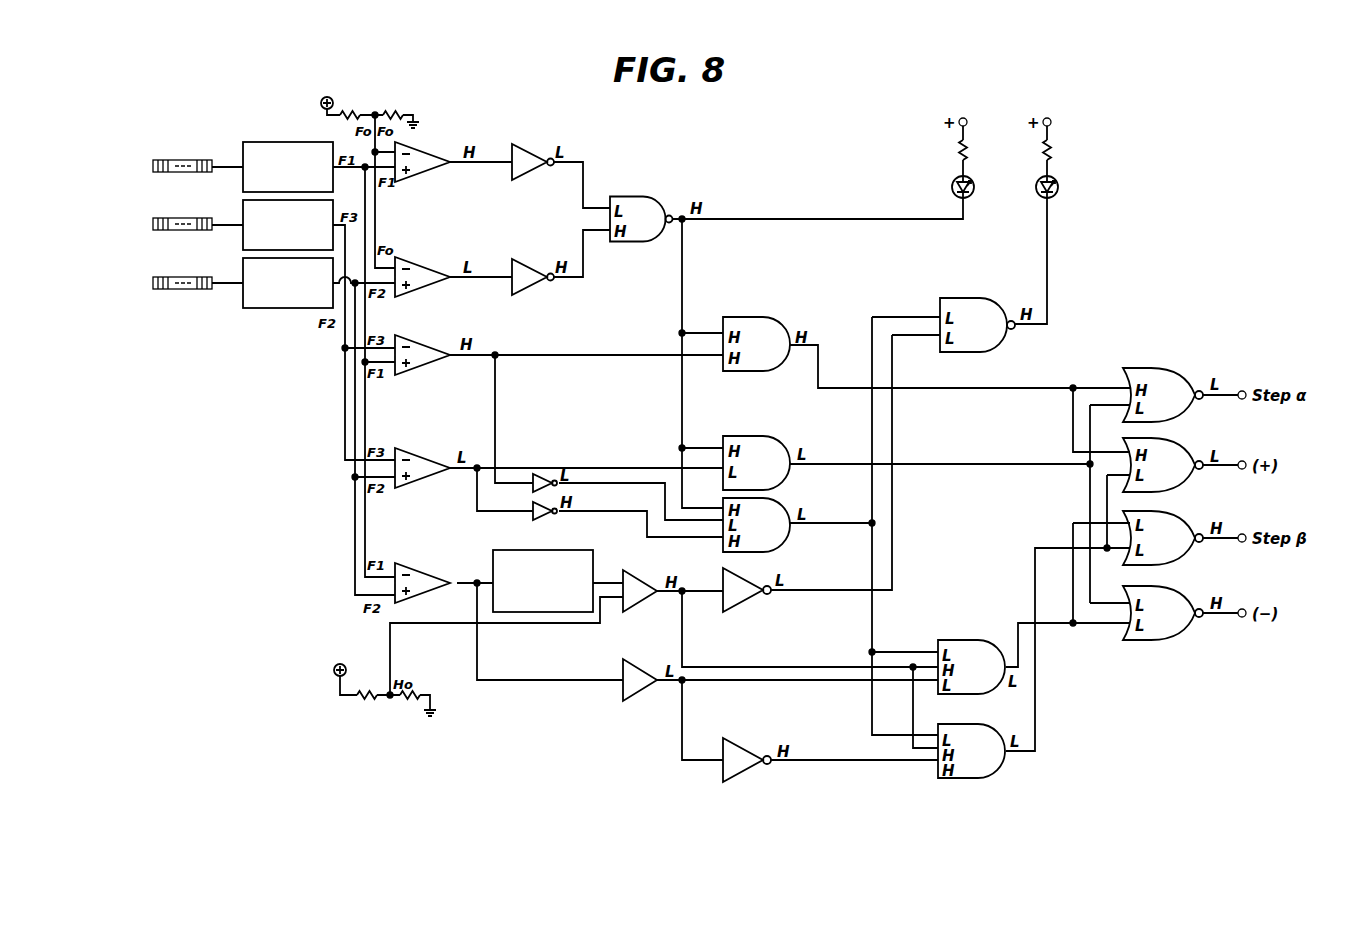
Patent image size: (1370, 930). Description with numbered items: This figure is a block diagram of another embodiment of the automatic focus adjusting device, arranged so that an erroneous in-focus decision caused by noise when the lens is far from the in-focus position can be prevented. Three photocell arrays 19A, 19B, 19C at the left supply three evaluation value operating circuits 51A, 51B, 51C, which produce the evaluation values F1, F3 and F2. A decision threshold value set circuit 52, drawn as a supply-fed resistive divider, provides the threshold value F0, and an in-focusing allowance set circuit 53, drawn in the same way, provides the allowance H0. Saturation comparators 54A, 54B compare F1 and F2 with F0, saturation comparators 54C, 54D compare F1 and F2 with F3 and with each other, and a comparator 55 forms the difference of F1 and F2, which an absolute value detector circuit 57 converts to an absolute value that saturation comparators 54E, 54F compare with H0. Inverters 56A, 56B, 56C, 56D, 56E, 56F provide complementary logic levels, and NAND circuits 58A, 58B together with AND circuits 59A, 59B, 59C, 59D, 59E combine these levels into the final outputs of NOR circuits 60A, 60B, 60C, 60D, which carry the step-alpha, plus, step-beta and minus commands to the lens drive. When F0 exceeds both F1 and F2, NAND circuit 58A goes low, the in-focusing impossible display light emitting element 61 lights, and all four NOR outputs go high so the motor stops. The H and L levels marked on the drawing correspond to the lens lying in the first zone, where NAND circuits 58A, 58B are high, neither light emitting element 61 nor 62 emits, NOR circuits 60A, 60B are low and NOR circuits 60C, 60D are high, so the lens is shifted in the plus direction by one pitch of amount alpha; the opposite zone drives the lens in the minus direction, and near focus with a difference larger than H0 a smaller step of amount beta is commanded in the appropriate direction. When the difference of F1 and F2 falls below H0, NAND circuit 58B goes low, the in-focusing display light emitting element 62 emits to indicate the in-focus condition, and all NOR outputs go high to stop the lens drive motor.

The photocell array 19A is at (170, 160).
The photocell array 19B is at (167, 277).
The photocell array 19C is at (167, 218).
The evaluation value operating circuit 51A is at (268, 142).
The evaluation value operating circuit 51B is at (243, 200).
The evaluation value operating circuit 51C is at (243, 258).
The decision threshold value set circuit 52 is at (375, 115).
The in-focusing allowance set circuit 53 is at (390, 698).
The saturation comparator 54A is at (430, 172).
The saturation comparator 54B is at (432, 285).
The saturation comparator 54C is at (431, 363).
The saturation comparator 54D is at (422, 462).
The saturation comparator 54E is at (642, 581).
The saturation comparator 54F is at (642, 665).
The comparator 55 is at (419, 571).
The inverter 56A is at (528, 172).
The inverter 56B is at (541, 285).
The inverter 56C is at (542, 473).
The inverter 56D is at (537, 520).
The inverter 56E is at (753, 578).
The inverter 56F is at (741, 745).
The absolute value detector circuit 57 is at (572, 550).
The NAND circuit 58A is at (652, 198).
The NAND circuit 58B is at (965, 298).
The AND circuit 59A is at (753, 317).
The AND circuit 59B is at (750, 437).
The AND circuit 59C is at (776, 498).
The AND circuit 59D is at (985, 640).
The AND circuit 59E is at (965, 778).
The NOR circuit 60A is at (1150, 368).
The NOR circuit 60B is at (1159, 442).
The NOR circuit 60C is at (1159, 513).
The NOR circuit 60D is at (1159, 585).
The in-focusing impossible display light emitting element 61 is at (951, 187).
The in-focusing display light emitting element 62 is at (1041, 179).